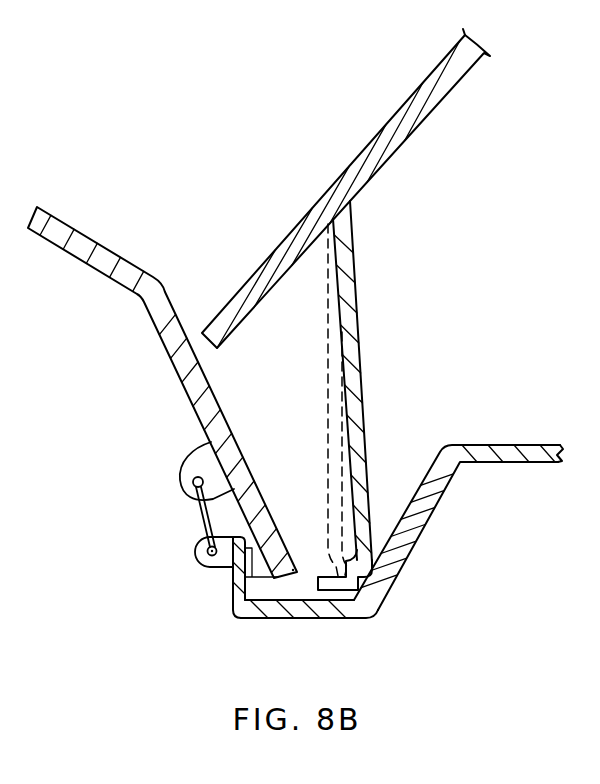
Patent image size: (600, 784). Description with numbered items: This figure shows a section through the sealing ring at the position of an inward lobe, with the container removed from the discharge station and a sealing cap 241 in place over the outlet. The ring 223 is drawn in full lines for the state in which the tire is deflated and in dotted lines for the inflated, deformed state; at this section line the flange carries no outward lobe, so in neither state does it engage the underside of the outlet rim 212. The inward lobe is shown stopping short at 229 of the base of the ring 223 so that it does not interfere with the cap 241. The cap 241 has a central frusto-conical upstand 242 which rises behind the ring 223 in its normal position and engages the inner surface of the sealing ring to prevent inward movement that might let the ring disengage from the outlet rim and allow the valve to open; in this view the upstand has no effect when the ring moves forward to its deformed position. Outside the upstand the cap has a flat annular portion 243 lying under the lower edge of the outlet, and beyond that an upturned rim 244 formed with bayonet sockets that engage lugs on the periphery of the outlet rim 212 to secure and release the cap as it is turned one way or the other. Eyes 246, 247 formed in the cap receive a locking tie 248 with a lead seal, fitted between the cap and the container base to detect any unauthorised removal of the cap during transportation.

The outlet rim 212 is at (125, 283).
The ring 223 is at (362, 410).
The stopping point of lobe 229 is at (370, 562).
The sealing cap 241 is at (368, 552).
The frusto-conical upstand 242 is at (443, 488).
The flat annular portion 243 is at (305, 610).
The upturned rim 244 is at (236, 585).
The eye 246 is at (183, 492).
The eye 247 is at (197, 557).
The locking tie 248 is at (203, 517).